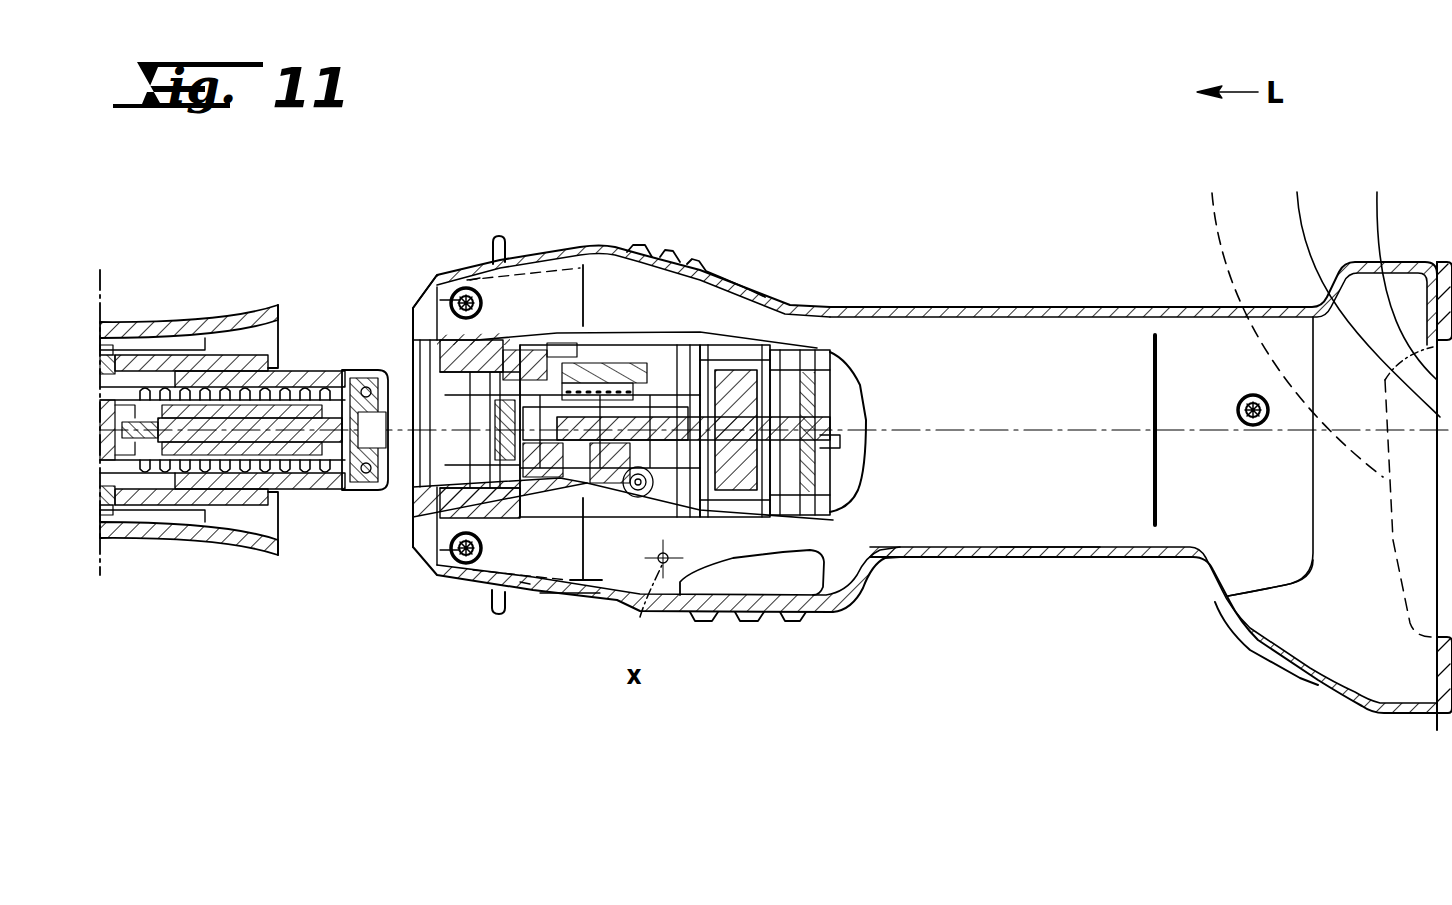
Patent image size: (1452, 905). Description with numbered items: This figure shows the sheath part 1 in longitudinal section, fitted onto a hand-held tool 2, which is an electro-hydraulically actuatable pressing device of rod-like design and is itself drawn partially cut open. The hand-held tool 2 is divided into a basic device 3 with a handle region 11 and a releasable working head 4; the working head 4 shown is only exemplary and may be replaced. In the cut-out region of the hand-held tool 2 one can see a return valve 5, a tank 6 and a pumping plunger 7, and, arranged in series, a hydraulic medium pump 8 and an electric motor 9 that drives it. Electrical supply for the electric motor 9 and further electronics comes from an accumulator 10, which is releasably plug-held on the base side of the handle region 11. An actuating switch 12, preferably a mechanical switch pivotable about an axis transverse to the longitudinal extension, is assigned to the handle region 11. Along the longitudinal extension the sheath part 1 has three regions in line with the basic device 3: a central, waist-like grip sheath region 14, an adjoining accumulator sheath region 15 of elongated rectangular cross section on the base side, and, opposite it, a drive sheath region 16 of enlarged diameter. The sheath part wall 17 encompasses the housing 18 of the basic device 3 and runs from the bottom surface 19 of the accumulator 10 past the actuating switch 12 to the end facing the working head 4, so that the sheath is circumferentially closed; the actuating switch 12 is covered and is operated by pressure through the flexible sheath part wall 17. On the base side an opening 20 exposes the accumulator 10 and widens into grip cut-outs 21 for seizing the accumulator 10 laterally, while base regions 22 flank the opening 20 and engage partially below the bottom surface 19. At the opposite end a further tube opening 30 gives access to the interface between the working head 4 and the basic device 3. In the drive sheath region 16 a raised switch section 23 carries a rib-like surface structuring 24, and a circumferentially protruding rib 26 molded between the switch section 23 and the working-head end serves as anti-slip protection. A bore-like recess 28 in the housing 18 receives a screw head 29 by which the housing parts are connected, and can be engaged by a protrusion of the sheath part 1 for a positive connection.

The sheath part 1 is at (1047, 577).
The hand-held tool 2 is at (862, 255).
The basic device 3 is at (1023, 382).
The working head 4 is at (172, 300).
The return valve 5 is at (563, 370).
The tank 6 is at (520, 345).
The pumping plunger 7 is at (712, 375).
The hydraulic medium pump 8 is at (788, 398).
The electric motor 9 is at (850, 400).
The accumulator 10 is at (1407, 513).
The handle region 11 is at (1080, 458).
The actuating switch 12 is at (793, 570).
The grip sheath region 14 is at (992, 558).
The accumulator sheath region 15 is at (1252, 648).
The drive sheath region 16 is at (563, 594).
The sheath part wall 17 is at (988, 307).
The housing 18 is at (475, 270).
The bottom surface 19 is at (1398, 265).
The opening 20 is at (1359, 284).
The grip cut-outs 21 is at (1291, 314).
The base regions 22 is at (1444, 260).
The switch section 23 is at (700, 268).
The rib-like surface structuring 24 is at (672, 262).
The rib 26 is at (502, 240).
The recess 28 is at (452, 300).
The screw head 29 is at (458, 292).
The opening 30 is at (437, 340).